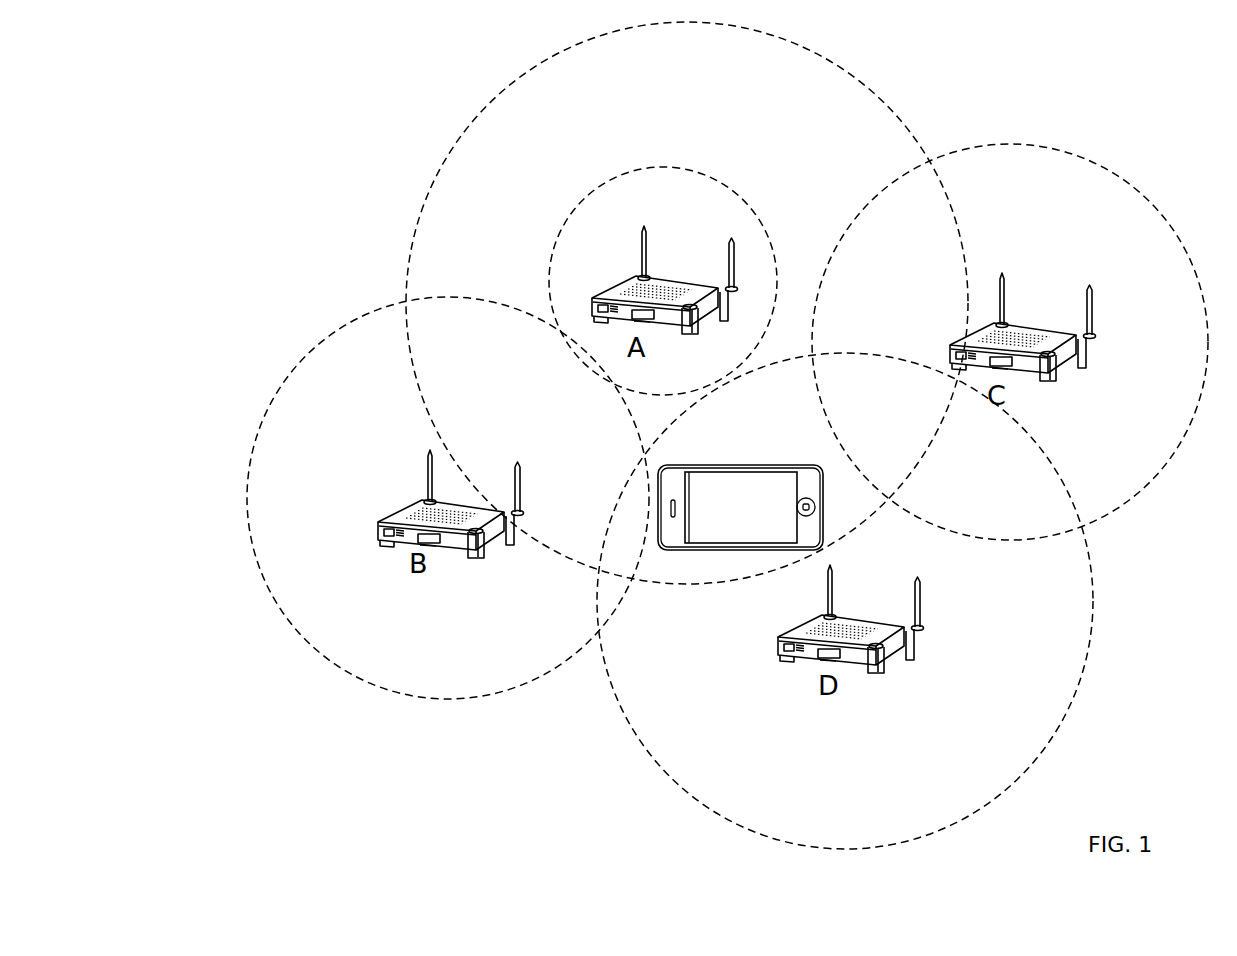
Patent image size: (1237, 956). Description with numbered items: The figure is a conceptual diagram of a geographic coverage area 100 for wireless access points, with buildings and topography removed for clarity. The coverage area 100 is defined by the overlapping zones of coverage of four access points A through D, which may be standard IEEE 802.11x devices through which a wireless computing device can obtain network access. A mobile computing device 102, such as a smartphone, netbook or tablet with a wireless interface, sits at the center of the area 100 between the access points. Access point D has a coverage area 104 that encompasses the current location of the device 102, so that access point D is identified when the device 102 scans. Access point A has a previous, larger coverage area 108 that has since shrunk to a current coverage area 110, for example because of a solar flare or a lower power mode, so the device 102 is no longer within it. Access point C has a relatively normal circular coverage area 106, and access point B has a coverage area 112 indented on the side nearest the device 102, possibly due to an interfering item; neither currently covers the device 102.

The coverage area 100 is at (386, 72).
The mobile computing device 102 is at (730, 551).
The coverage area of access point D 104 is at (1093, 603).
The coverage area of access point C 106 is at (1157, 209).
The previous coverage area of access point A 108 is at (878, 99).
The current coverage area of access point A 110 is at (718, 178).
The coverage area of access point B 112 is at (253, 498).